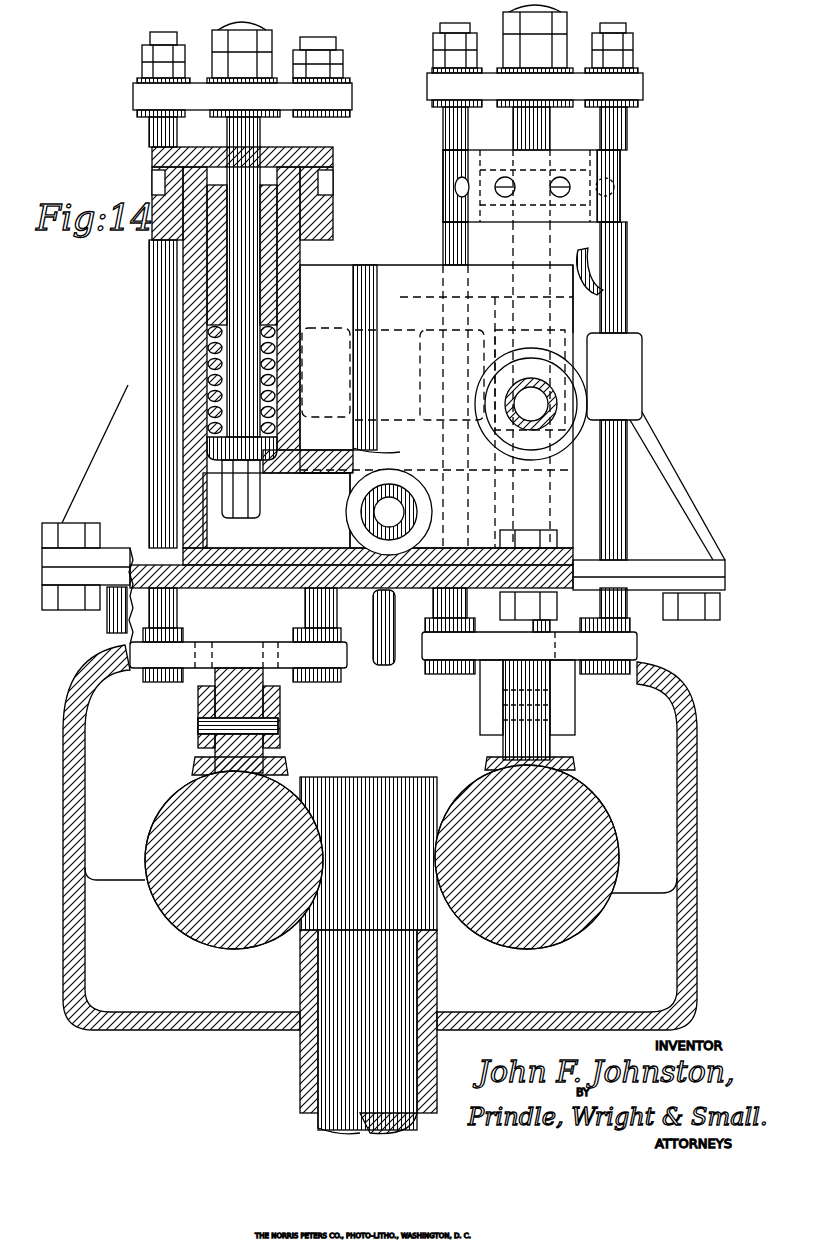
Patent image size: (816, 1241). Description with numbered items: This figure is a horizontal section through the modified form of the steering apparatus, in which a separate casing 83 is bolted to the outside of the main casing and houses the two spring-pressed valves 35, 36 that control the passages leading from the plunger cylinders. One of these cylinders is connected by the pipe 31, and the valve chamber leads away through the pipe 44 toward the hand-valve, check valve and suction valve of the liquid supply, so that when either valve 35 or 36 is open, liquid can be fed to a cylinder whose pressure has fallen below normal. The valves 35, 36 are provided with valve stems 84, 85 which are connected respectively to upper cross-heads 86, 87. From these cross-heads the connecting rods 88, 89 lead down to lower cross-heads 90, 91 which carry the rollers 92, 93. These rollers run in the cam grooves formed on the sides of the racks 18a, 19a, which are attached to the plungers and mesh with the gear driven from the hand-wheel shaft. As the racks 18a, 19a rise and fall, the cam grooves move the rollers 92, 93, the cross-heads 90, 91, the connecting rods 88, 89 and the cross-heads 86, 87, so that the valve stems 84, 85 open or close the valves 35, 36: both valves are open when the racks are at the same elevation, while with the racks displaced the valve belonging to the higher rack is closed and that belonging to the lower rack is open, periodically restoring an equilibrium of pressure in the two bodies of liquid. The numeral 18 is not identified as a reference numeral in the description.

The cross-head 87 is at (283, 95).
The cross-head 86 is at (578, 83).
The valve stem 85 is at (236, 135).
The valve stem 84 is at (540, 133).
The connecting rod 89 is at (152, 272).
The connecting rod 88 is at (608, 270).
The pipe 31 is at (540, 398).
The spring-pressed valve 36 is at (222, 455).
The separate casing 83 is at (193, 528).
The pipe 44 is at (432, 510).
The spring-pressed valve 35 is at (600, 465).
The cross-head 91 is at (138, 653).
The cross-head 90 is at (620, 648).
The roller 93 is at (223, 702).
The roller 92 is at (553, 742).
The rack 19a is at (185, 808).
The rack 18a is at (588, 838).
The shaft 18 is at (340, 1050).